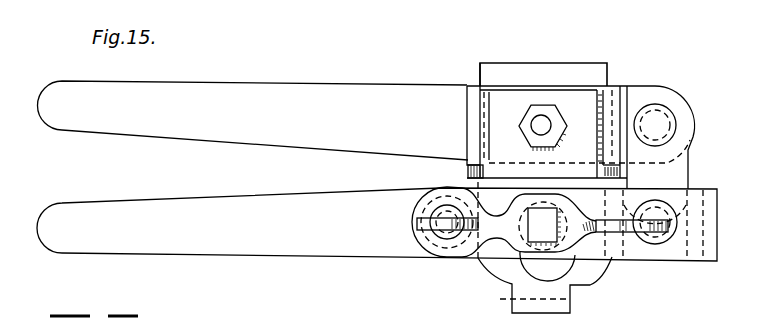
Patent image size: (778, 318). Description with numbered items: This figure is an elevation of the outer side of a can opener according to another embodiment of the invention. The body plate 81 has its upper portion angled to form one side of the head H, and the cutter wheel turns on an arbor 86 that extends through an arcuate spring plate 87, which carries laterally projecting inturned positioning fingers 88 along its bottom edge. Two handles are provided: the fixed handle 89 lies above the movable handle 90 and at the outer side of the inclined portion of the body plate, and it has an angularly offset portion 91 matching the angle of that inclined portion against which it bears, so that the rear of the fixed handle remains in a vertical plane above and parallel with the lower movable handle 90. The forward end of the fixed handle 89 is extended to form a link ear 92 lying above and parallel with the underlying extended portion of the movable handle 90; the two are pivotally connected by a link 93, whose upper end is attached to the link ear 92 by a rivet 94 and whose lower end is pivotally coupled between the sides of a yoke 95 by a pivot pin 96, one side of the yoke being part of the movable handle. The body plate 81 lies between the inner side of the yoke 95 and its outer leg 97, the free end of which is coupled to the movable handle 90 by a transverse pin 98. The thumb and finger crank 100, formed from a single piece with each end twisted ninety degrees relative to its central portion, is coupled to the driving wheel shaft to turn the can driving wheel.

The body plate 81 is at (497, 267).
The arbor 86 is at (538, 123).
The arcuate spring plate 87 is at (565, 98).
The head H is at (615, 57).
The positioning fingers 88 is at (466, 172).
The fixed handle 89 is at (345, 91).
The movable handle 90 is at (325, 243).
The angularly offset portion 91 is at (473, 97).
The link ear 92 is at (680, 108).
The link 93 is at (677, 167).
The rivet 94 is at (663, 120).
The yoke 95 is at (658, 265).
The pivot pin 96 is at (668, 225).
The outer leg of the yoke 97 is at (613, 247).
The transverse pin 98 is at (442, 237).
The thumb and finger crank 100 is at (537, 235).